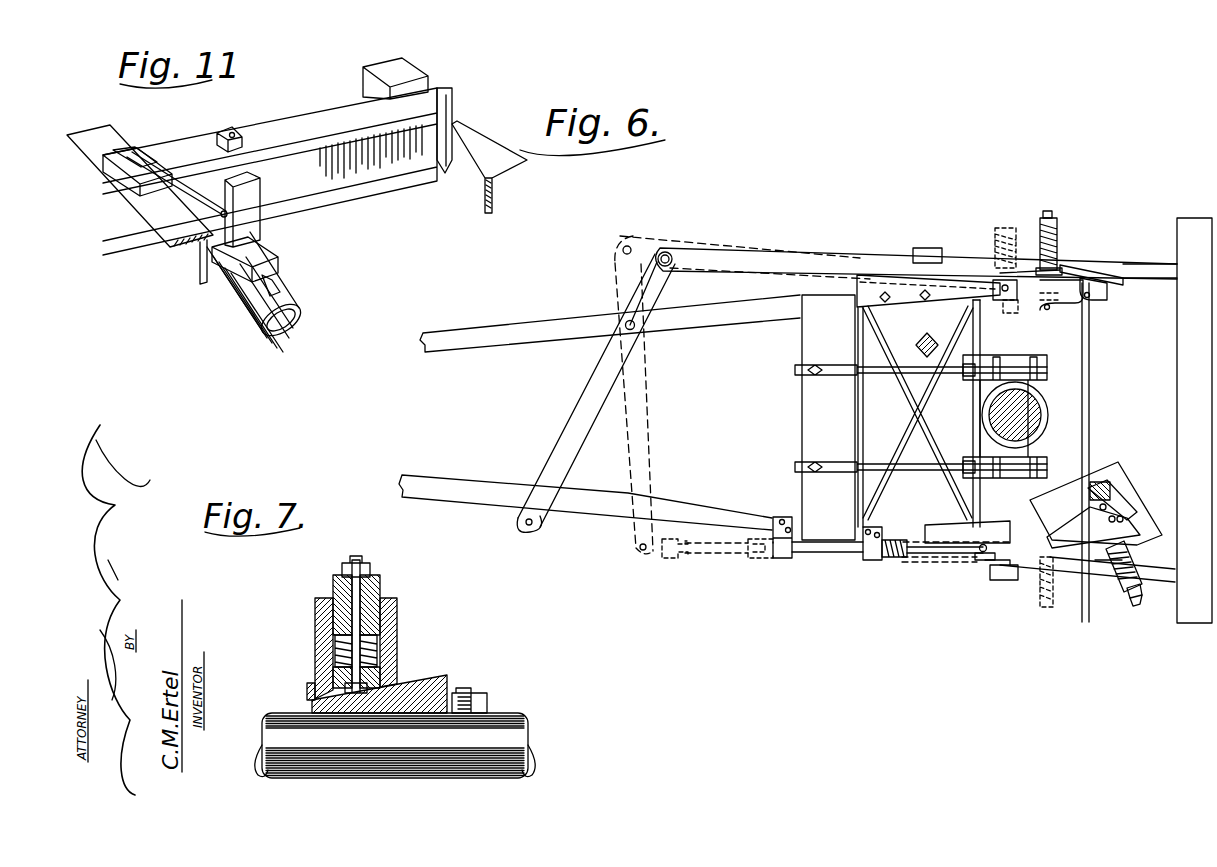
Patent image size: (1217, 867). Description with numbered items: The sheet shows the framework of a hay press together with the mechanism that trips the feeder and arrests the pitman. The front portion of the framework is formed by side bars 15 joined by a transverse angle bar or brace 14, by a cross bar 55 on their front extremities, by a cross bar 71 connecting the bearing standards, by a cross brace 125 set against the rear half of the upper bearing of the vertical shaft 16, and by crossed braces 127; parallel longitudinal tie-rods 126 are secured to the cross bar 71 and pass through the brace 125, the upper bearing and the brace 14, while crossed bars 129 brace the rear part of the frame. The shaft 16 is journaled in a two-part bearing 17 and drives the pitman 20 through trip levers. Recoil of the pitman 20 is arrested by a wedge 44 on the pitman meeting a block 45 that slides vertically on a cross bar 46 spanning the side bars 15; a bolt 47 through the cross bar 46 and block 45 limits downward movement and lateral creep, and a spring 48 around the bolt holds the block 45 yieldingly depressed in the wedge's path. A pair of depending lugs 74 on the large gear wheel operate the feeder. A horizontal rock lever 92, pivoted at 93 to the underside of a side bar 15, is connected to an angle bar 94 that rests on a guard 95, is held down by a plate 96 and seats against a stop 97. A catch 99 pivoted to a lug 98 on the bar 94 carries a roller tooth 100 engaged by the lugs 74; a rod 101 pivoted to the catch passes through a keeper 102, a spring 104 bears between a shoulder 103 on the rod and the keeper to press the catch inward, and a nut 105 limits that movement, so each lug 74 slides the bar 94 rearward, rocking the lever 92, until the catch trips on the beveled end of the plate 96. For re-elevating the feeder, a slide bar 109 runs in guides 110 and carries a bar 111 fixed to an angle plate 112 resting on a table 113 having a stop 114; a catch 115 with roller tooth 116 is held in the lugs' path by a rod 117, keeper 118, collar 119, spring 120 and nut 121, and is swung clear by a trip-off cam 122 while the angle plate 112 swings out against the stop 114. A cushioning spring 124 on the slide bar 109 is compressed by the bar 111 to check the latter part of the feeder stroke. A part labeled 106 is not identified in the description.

In FIG. 6, the transverse angle bar or brace 14 is at (1093, 370).
In FIG. 11, the side bars 15 is at (527, 160).
In FIG. 6, the side bars 15 is at (497, 347).
In FIG. 6, the vertical shaft 16 is at (1040, 411).
In FIG. 6, the two-part bearing 17 is at (1033, 447).
In FIG. 11, the pitman 20 is at (300, 329).
In FIG. 7, the pitman 20 is at (522, 713).
In FIG. 11, the wedge 44 is at (277, 260).
In FIG. 7, the wedge 44 is at (440, 677).
In FIG. 11, the block 45 is at (247, 203).
In FIG. 7, the block 45 is at (315, 627).
In FIG. 11, the cross bar 46 is at (371, 172).
In FIG. 7, the cross bar 46 is at (335, 580).
In FIG. 11, the bolt 47 is at (232, 132).
In FIG. 7, the bolt 47 is at (361, 562).
In FIG. 7, the spring 48 is at (333, 657).
In FIG. 6, the cross bar 55 is at (1196, 222).
In FIG. 6, the cross bar 71 is at (800, 338).
In FIG. 6, the depending lugs 74 is at (916, 342).
In FIG. 6, the horizontal rock lever 92 is at (560, 455).
In FIG. 6, the pivot 93 is at (626, 322).
In FIG. 6, the angle bar 94 is at (712, 262).
In FIG. 6, the guard 95 is at (921, 246).
In FIG. 6, the plate 96 is at (880, 293).
In FIG. 6, the stop 97 is at (1124, 275).
In FIG. 6, the lug 98 is at (1122, 283).
In FIG. 6, the catch 99 is at (1095, 302).
In FIG. 6, the roller tooth 100 is at (1058, 308).
In FIG. 6, the rod 101 is at (1046, 212).
In FIG. 6, the keeper 102 is at (1030, 226).
In FIG. 6, the shoulder 103 is at (1060, 263).
In FIG. 6, the spring 104 is at (1062, 236).
In FIG. 6, the nut 105 is at (1057, 212).
In FIG. 6, the tab 106 is at (995, 288).
In FIG. 6, the slide bar 109 is at (815, 545).
In FIG. 6, the supporting guides 110 is at (777, 558).
In FIG. 6, the bar 111 is at (1000, 548).
In FIG. 6, the angle plate 112 is at (1075, 568).
In FIG. 6, the table 113 is at (1095, 558).
In FIG. 6, the stop 114 is at (985, 563).
In FIG. 6, the catch 115 is at (1000, 592).
In FIG. 6, the roller tooth 116 is at (1098, 508).
In FIG. 6, the rod 117 is at (1138, 595).
In FIG. 6, the keeper 118 is at (1118, 588).
In FIG. 6, the collar 119 is at (1140, 583).
In FIG. 6, the spring 120 is at (1107, 587).
In FIG. 6, the nut 121 is at (1147, 600).
In FIG. 6, the trip-off cam 122 is at (1105, 500).
In FIG. 6, the cushioning spring 124 is at (887, 558).
In FIG. 6, the cross brace 125 is at (973, 495).
In FIG. 6, the longitudinal tie-rods 126 is at (797, 370).
In FIG. 6, the crossed braces 127 is at (910, 403).
In FIG. 11, the crossed bars 129 is at (447, 174).